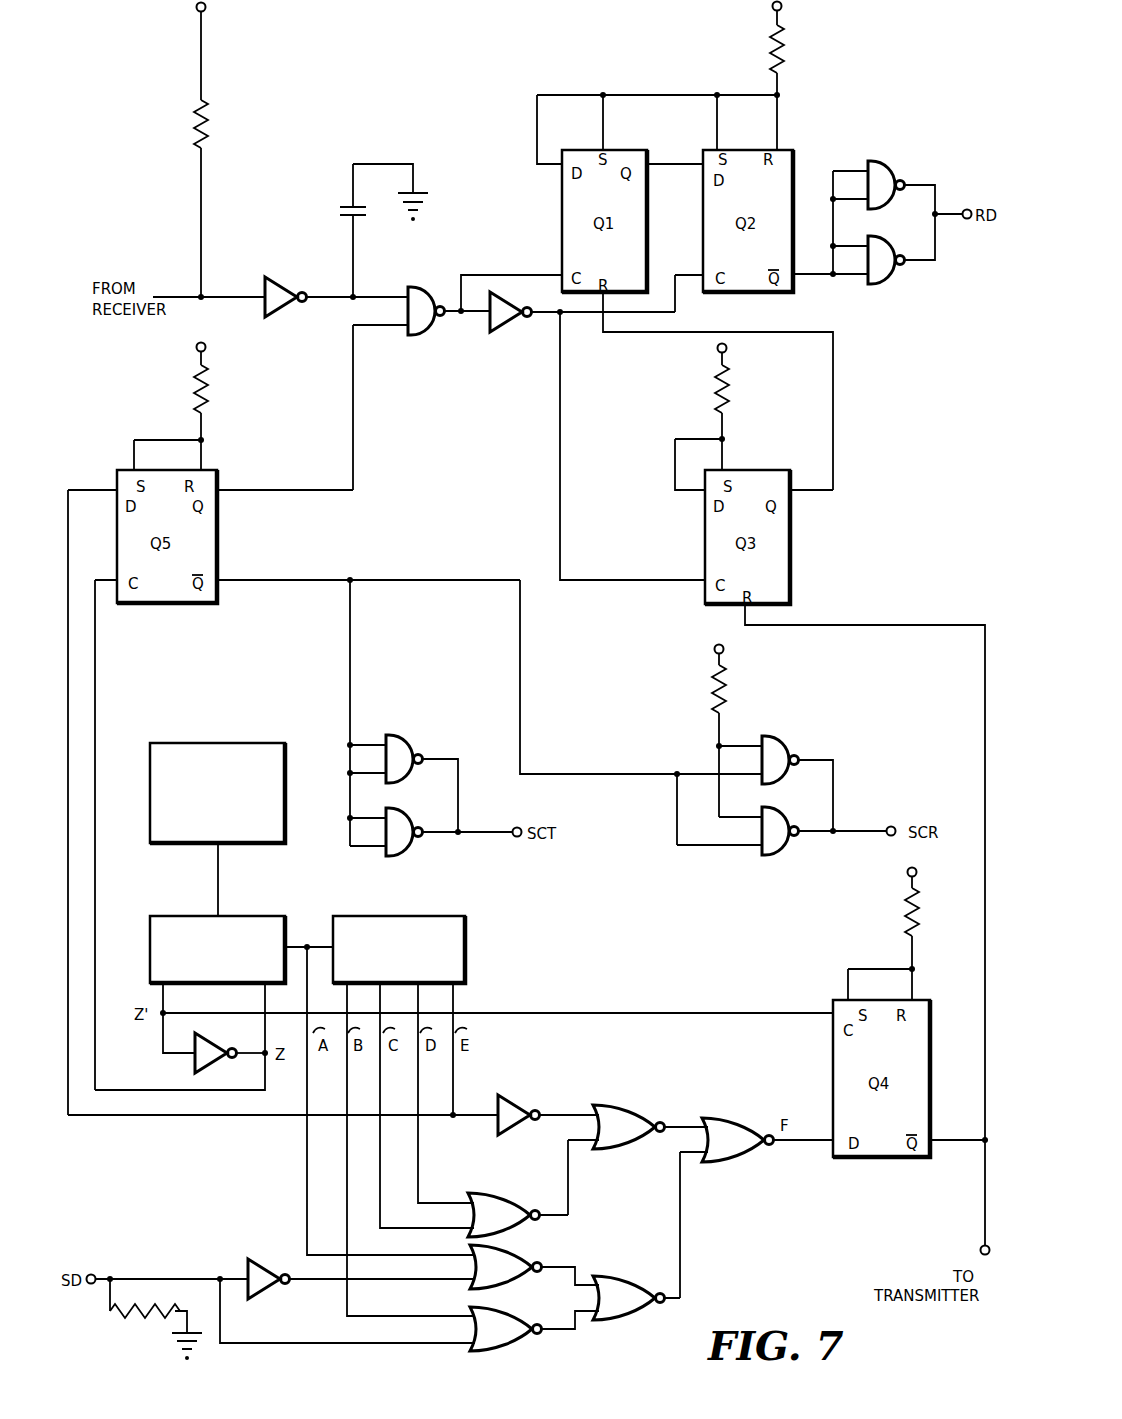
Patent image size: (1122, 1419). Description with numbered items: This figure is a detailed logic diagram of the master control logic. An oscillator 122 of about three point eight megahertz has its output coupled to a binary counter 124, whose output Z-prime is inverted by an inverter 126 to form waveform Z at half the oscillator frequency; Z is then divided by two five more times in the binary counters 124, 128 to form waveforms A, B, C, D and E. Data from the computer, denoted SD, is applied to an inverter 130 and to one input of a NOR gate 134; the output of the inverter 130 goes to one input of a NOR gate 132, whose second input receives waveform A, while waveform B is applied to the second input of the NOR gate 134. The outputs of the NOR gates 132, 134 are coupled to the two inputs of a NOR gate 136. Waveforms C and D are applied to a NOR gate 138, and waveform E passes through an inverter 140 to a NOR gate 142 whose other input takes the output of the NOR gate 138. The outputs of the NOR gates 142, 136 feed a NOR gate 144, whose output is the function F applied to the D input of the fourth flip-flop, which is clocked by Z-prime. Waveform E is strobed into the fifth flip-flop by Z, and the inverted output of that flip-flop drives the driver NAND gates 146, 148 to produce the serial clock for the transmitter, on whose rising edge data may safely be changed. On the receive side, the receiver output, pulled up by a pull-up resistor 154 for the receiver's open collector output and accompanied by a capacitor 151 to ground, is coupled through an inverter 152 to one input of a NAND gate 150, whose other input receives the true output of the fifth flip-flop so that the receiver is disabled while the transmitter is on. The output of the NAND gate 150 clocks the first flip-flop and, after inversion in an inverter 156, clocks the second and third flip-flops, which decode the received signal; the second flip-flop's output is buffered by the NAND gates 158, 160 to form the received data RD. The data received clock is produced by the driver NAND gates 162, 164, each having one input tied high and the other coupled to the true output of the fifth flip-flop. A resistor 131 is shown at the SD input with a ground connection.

The oscillator 122 is at (253, 743).
The binary counter 124 is at (256, 916).
The inverter 126 is at (220, 1043).
The binary counter 128 is at (436, 916).
The inverter 130 is at (272, 1249).
The resistor 131 is at (138, 1327).
The NOR gate 132 is at (523, 1249).
The NOR gate 134 is at (530, 1340).
The NOR gate 136 is at (607, 1275).
The NOR gate 138 is at (492, 1188).
The inverter 140 is at (507, 1099).
The NOR gate 142 is at (625, 1103).
The NOR gate 144 is at (725, 1110).
The driver NAND gate 146 is at (402, 738).
The driver NAND gate 148 is at (404, 852).
The NAND gate 150 is at (432, 287).
The capacitor 151 is at (341, 203).
The inverter 152 is at (276, 280).
The pull-up resistor 154 is at (209, 128).
The inverter 156 is at (508, 330).
The NAND gate 158 is at (879, 164).
The NAND gate 160 is at (889, 274).
The driver NAND gate 162 is at (777, 736).
The driver NAND gate 164 is at (774, 852).